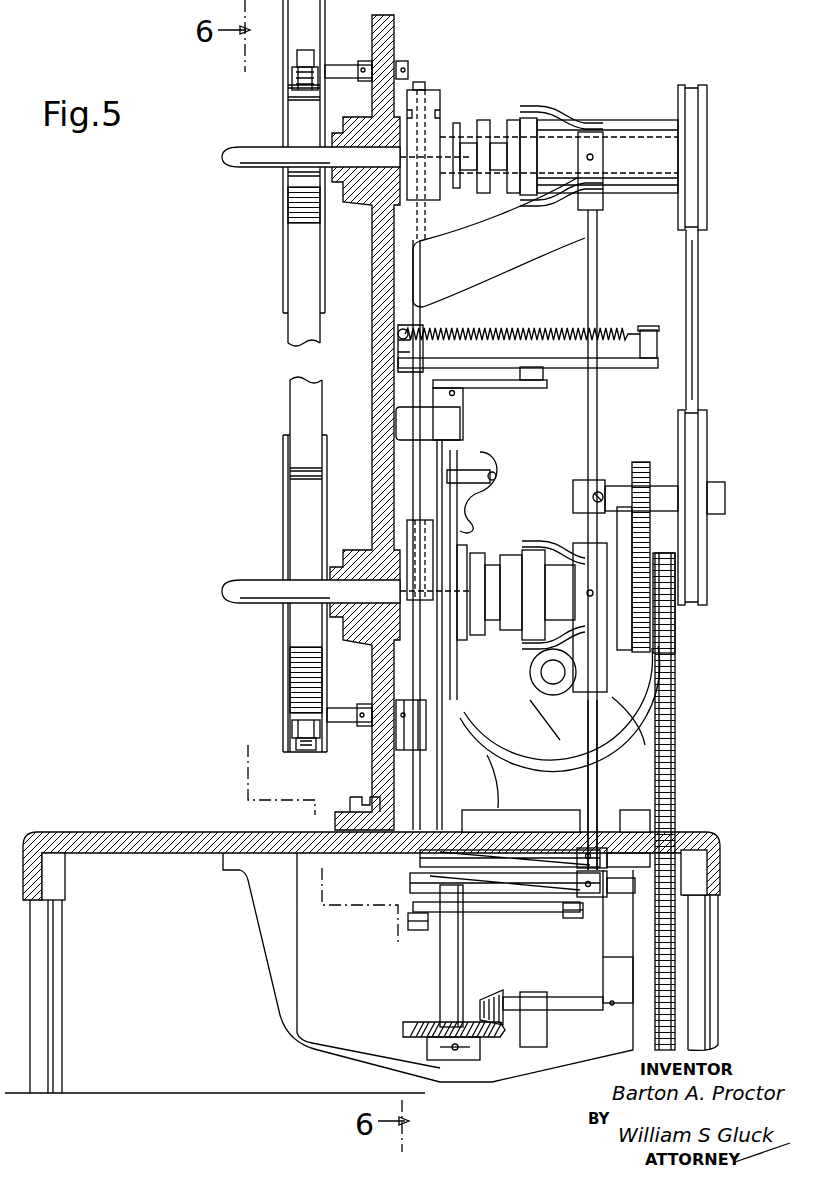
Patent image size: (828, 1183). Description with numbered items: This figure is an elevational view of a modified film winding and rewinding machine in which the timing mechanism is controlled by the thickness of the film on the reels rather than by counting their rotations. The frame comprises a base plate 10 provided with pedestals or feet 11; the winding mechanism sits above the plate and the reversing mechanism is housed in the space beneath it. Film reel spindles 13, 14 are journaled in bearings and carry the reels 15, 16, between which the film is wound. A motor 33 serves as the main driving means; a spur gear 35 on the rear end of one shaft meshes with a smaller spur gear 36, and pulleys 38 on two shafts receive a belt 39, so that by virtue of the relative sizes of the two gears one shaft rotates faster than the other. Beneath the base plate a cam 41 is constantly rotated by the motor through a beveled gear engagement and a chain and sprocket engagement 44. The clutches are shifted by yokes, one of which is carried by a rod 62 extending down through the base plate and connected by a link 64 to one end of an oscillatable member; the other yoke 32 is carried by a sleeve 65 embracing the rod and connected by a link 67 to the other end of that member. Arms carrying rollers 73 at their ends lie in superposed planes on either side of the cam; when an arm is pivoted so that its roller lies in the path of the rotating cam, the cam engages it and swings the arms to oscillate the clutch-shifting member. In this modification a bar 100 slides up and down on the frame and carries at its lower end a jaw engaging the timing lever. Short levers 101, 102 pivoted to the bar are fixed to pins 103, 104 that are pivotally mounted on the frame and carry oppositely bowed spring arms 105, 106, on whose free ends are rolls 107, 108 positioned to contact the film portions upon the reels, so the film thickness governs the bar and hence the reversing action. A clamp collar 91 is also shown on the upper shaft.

The base plate 10 is at (703, 832).
The pedestals or feet 11 is at (712, 945).
The film reel spindle 13 is at (250, 147).
The film reel spindle 14 is at (250, 580).
The reel 15 is at (294, 24).
The reel 16 is at (327, 432).
The yoke 32 is at (520, 640).
The motor 33 is at (560, 727).
The spur gear 35 is at (652, 585).
The spur gear 36 is at (641, 462).
The pulleys 38 is at (707, 205).
The belt 39 is at (698, 315).
The cam 41 is at (510, 912).
The chain and sprocket engagement 44 is at (672, 672).
The rod 62 is at (597, 278).
The link 64 is at (500, 885).
The sleeve 65 is at (597, 775).
The link 67 is at (520, 860).
The projections or rollers 73 is at (418, 930).
The clamp collar 91 is at (553, 110).
The bar 100 is at (410, 790).
The short lever 101 is at (432, 80).
The short lever 102 is at (405, 735).
The pin 103 is at (342, 78).
The pin 104 is at (342, 708).
The spring arm 105 is at (305, 50).
The spring arm 106 is at (306, 750).
The roll 107 is at (299, 90).
The roll 108 is at (292, 727).